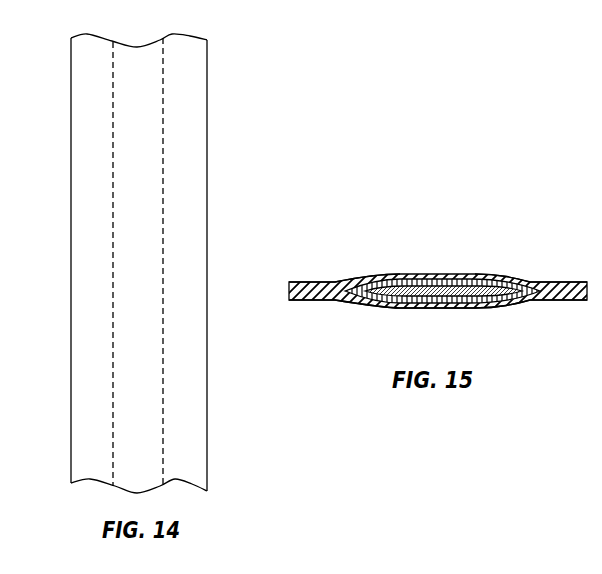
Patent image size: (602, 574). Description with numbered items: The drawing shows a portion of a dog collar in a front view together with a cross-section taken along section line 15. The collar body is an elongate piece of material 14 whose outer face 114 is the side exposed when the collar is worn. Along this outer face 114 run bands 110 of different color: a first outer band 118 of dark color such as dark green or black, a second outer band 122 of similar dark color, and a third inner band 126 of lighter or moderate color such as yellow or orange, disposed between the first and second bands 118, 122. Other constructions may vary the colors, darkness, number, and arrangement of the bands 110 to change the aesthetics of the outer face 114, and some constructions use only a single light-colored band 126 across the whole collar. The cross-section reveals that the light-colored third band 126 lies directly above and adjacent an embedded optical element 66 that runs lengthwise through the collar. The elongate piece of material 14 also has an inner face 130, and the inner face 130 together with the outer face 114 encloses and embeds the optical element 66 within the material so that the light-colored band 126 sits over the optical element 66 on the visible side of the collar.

In FIG. 14, the elongate piece of material 14 is at (140, 263).
In FIG. 14, the section line for FIG. 15 is at (66, 314).
In FIG. 15, the optical element 66 is at (434, 297).
In FIG. 14, the bands 110 is at (93, 203).
In FIG. 14, the outer face 114 is at (187, 114).
In FIG. 15, the outer face 114 is at (548, 283).
In FIG. 14, the first outer band 118 is at (91, 334).
In FIG. 15, the first outer band 118 is at (357, 282).
In FIG. 14, the second outer band 122 is at (193, 361).
In FIG. 15, the second outer band 122 is at (517, 282).
In FIG. 14, the third inner band 126 is at (143, 430).
In FIG. 15, the third inner band 126 is at (443, 273).
In FIG. 15, the inner face 130 is at (358, 301).